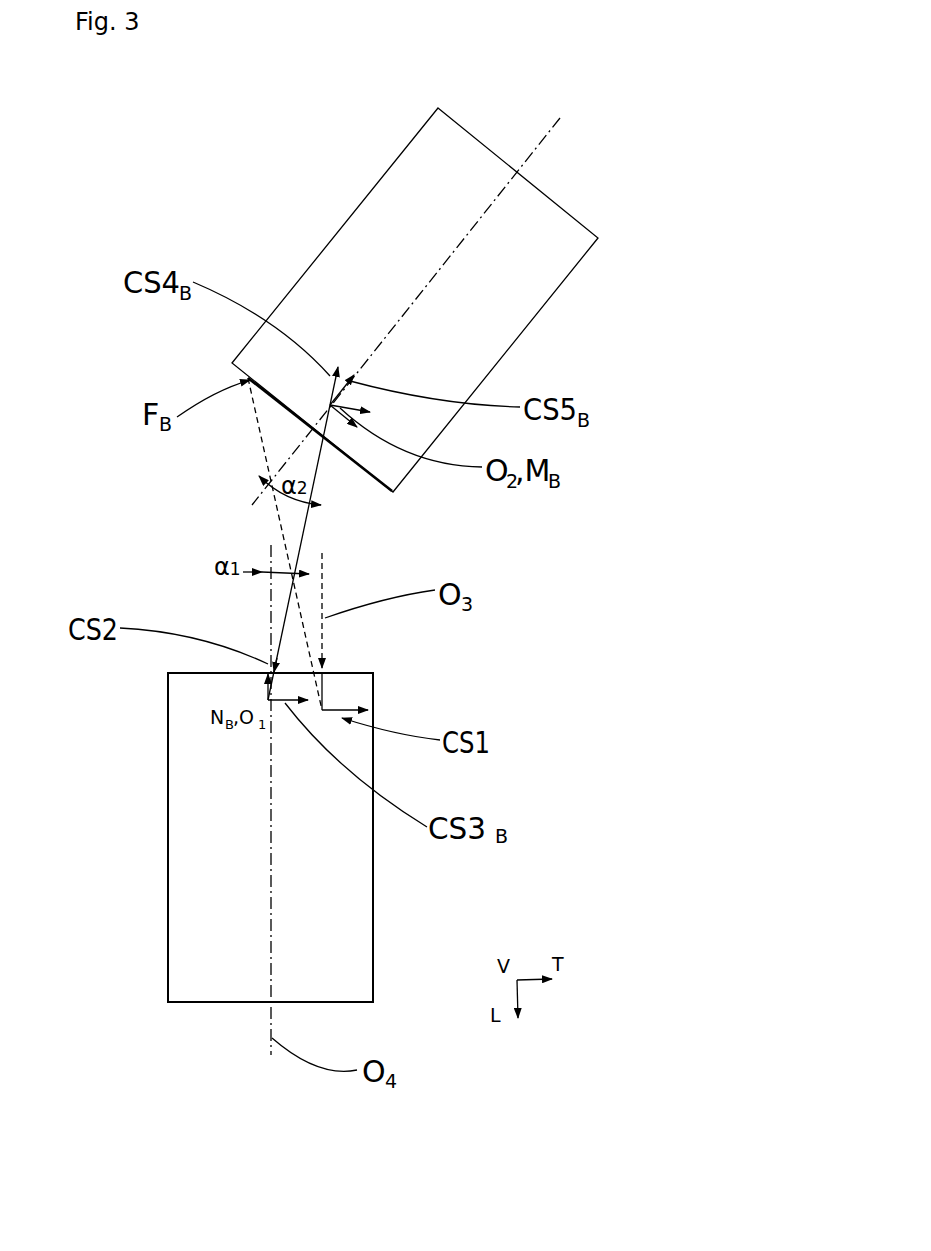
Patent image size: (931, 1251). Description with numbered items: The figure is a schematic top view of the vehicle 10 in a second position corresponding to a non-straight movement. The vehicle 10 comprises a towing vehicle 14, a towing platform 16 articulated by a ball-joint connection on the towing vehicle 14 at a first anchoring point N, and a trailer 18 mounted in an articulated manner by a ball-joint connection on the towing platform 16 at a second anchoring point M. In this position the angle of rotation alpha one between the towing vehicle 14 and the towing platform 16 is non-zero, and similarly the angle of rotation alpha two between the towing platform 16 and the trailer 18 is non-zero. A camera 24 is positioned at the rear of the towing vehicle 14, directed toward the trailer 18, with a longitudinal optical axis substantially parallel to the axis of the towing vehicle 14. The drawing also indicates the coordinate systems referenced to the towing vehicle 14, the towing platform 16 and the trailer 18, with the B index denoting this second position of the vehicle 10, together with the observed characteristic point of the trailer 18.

The vehicle 10 is at (545, 372).
The towing vehicle 14 is at (147, 875).
The towing platform 16 is at (313, 525).
The trailer 18 is at (323, 210).
The camera 24 is at (340, 665).